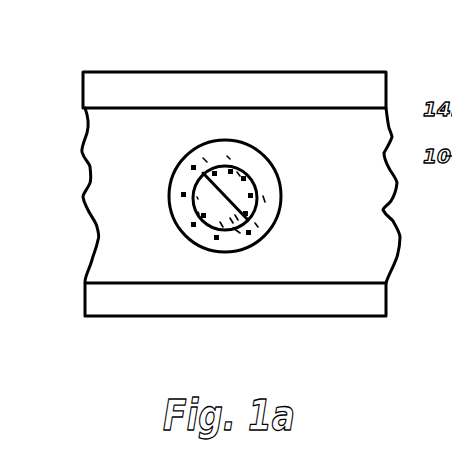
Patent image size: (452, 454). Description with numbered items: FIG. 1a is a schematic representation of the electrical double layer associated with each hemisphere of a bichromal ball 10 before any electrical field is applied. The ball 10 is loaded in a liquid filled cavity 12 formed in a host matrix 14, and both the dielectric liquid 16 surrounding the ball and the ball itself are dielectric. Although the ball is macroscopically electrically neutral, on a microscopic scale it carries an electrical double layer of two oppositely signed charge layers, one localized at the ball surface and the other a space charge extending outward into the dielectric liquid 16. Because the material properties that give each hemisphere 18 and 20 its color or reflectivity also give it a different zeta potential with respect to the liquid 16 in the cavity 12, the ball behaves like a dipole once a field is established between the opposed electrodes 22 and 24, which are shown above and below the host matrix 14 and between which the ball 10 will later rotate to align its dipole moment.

The bichromal ball 10 is at (186, 173).
The liquid filled cavity 12 is at (271, 177).
The host matrix 14 is at (367, 238).
The dielectric liquid 16 is at (205, 152).
The hemisphere 18 is at (237, 230).
The hemisphere 20 is at (237, 173).
The electrode 22 is at (278, 92).
The electrode 24 is at (313, 302).